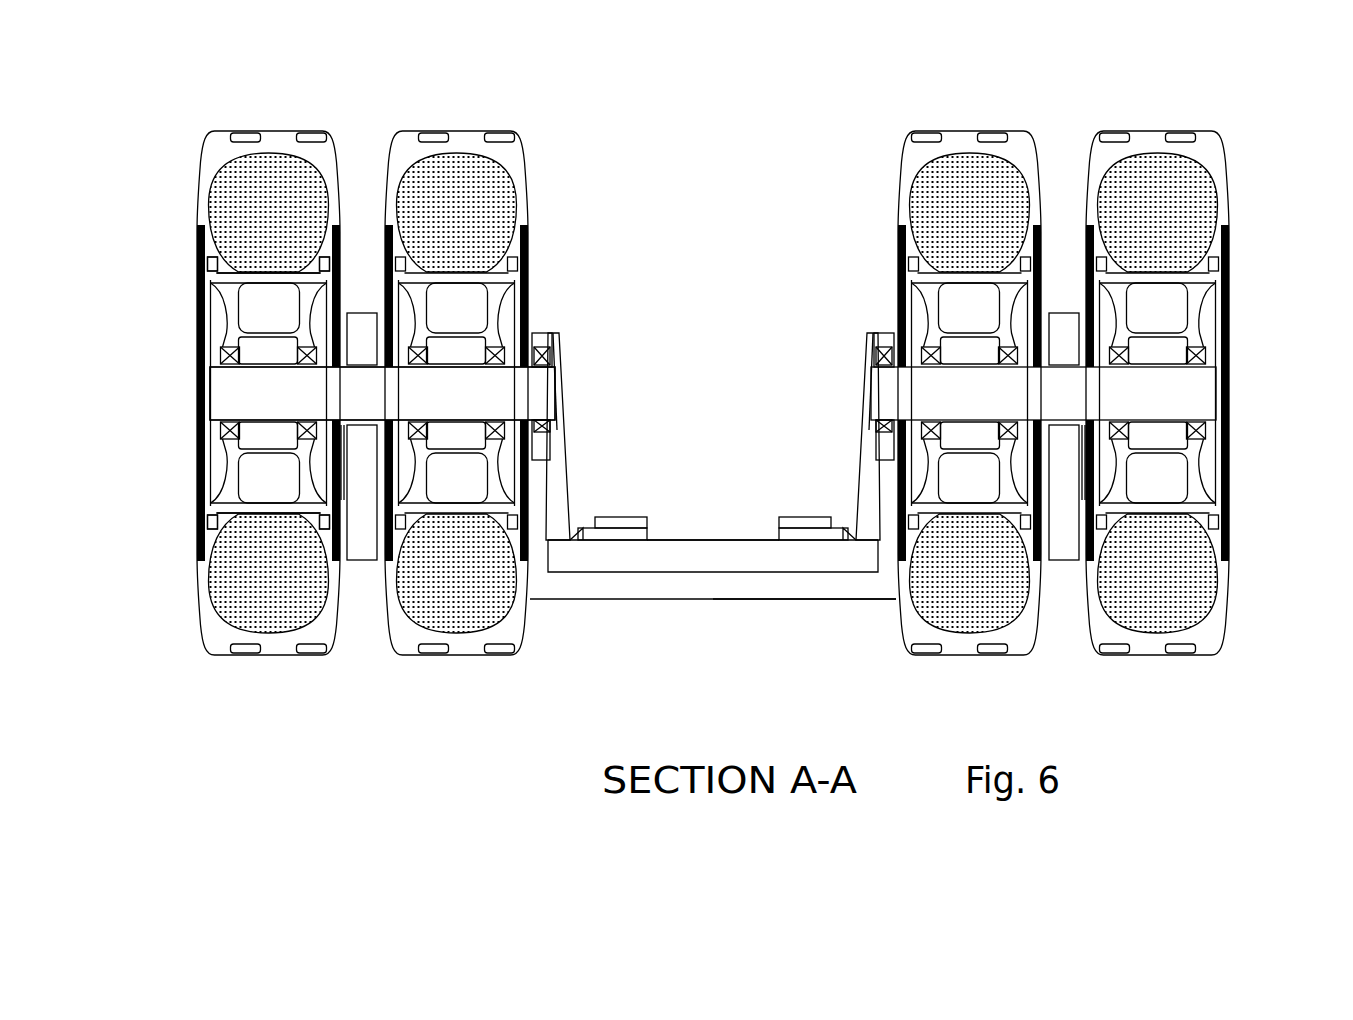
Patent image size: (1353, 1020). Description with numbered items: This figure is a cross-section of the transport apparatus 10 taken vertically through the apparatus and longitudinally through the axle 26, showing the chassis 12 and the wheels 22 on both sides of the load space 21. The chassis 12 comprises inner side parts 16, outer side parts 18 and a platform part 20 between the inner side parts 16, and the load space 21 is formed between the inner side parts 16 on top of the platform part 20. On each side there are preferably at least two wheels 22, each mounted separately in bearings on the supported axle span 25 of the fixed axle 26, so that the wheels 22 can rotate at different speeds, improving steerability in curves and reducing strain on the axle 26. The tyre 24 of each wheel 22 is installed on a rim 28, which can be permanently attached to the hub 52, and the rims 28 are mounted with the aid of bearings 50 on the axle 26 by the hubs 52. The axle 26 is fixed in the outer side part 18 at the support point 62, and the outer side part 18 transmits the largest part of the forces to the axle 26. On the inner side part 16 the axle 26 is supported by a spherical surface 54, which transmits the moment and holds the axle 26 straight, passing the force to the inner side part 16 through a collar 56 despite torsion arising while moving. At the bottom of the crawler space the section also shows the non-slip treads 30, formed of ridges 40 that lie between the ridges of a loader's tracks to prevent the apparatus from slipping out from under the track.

The transport apparatus 10 is at (1142, 728).
The chassis 12 is at (788, 630).
The inner side part 16 is at (555, 470).
The outer side part 18 is at (360, 352).
The platform part 20 is at (678, 583).
The load space 21 is at (718, 243).
The wheel 22 is at (150, 358).
The tyre 24 is at (450, 137).
The axle span 25 is at (449, 394).
The axle 26 is at (713, 393).
The rim 28 is at (196, 278).
The non-slip tread 30 is at (760, 526).
The ridge 40 is at (600, 517).
The bearing 50 is at (205, 368).
The hub 52 is at (198, 341).
The spherical surface 54 is at (547, 343).
The collar 56 is at (562, 410).
The support point 62 is at (372, 318).